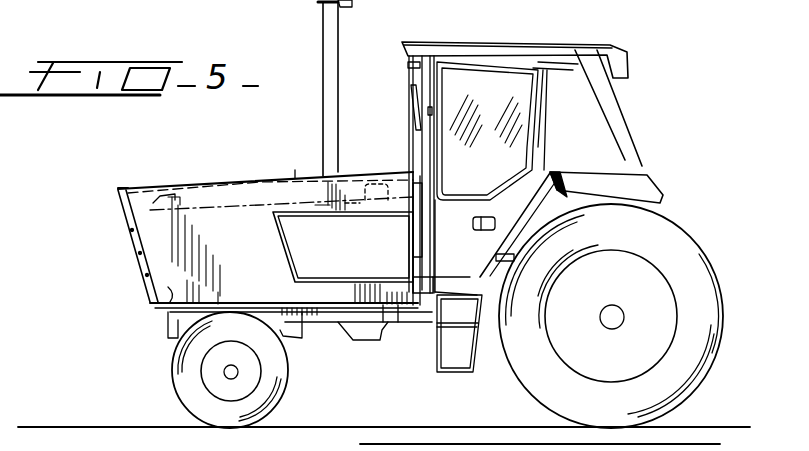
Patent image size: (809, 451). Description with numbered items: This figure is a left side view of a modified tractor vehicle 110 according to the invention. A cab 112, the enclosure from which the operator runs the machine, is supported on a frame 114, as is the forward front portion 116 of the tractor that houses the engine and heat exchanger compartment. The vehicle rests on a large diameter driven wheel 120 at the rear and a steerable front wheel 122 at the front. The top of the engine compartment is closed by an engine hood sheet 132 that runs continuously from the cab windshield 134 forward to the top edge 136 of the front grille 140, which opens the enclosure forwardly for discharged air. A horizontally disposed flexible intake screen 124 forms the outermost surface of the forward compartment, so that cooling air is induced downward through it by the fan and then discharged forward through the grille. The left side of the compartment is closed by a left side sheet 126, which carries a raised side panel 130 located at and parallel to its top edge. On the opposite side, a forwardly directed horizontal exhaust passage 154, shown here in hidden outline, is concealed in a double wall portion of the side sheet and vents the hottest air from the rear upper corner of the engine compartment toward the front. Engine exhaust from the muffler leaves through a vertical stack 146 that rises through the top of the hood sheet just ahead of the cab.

The tractor vehicle 110 is at (296, 136).
The cab 112 is at (503, 43).
The frame 114 is at (403, 322).
The front portion of the tractor 116 is at (124, 247).
The driven wheel 120 is at (703, 367).
The steerable front wheel 122 is at (282, 405).
The intake screen 124 is at (205, 183).
The left side sheet 126 is at (167, 308).
The raised side panel 130 is at (333, 262).
The engine hood sheet 132 is at (393, 148).
The cab windshield 134 is at (411, 80).
The top edge of front grille 136 is at (120, 187).
The front grille 140 is at (150, 300).
The vertical stack 146 is at (326, 24).
The exhaust passage 154 is at (240, 182).